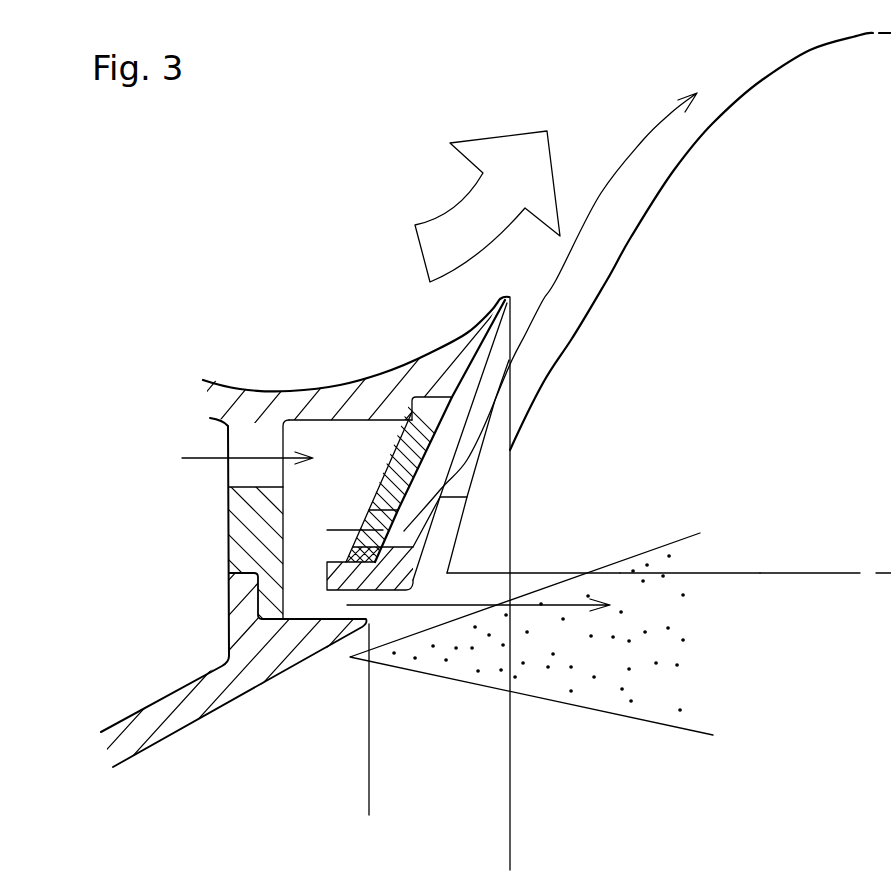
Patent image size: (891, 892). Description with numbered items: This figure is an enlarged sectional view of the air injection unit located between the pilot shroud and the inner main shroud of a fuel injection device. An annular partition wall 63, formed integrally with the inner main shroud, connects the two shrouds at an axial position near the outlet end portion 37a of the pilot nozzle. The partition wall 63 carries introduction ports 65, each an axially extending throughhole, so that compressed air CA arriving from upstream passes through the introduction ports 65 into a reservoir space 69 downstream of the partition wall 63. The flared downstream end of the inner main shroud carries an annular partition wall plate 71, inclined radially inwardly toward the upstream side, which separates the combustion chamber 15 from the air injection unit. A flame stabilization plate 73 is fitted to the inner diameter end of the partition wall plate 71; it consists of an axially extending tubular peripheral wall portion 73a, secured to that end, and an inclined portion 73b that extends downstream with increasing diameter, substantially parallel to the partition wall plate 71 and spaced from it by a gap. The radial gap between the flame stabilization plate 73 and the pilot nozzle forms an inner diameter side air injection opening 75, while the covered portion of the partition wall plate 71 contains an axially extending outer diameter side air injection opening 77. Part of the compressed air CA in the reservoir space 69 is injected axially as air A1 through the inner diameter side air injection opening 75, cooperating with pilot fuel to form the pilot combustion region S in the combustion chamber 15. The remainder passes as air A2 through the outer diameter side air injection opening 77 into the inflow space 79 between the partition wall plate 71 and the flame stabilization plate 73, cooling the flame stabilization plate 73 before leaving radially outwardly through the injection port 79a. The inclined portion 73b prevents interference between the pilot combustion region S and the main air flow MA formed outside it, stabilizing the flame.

The combustion chamber 15 is at (830, 665).
The outlet end portion 37a is at (296, 642).
The partition wall 63 is at (238, 543).
The introduction port 65 is at (252, 487).
The reservoir space 69 is at (385, 465).
The partition wall plate 71 is at (448, 417).
The flame stabilization plate 73 is at (397, 592).
The peripheral wall portion 73a is at (330, 596).
The inclined portion 73b is at (428, 567).
The inner diameter side air injection opening 75 is at (383, 600).
The outer diameter side air injection opening 77 is at (375, 520).
The inflow space 79 is at (402, 532).
The injection port 79a is at (427, 503).
The compressed air CA is at (197, 455).
The main air flow MA is at (493, 150).
The air A1 is at (565, 610).
The air A2 is at (643, 140).
The pilot combustion region S is at (753, 555).